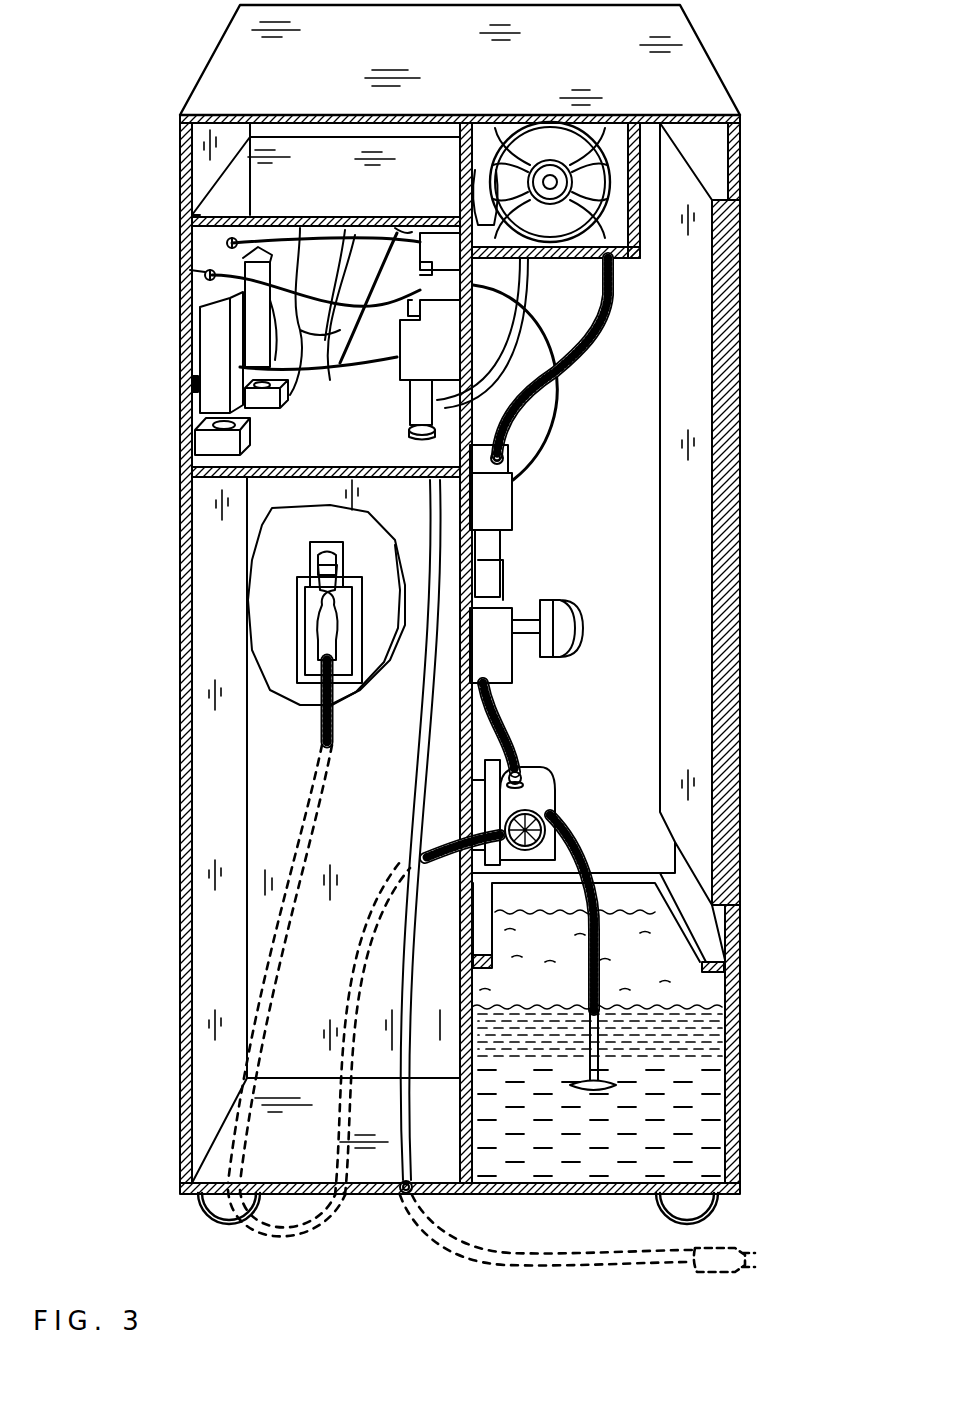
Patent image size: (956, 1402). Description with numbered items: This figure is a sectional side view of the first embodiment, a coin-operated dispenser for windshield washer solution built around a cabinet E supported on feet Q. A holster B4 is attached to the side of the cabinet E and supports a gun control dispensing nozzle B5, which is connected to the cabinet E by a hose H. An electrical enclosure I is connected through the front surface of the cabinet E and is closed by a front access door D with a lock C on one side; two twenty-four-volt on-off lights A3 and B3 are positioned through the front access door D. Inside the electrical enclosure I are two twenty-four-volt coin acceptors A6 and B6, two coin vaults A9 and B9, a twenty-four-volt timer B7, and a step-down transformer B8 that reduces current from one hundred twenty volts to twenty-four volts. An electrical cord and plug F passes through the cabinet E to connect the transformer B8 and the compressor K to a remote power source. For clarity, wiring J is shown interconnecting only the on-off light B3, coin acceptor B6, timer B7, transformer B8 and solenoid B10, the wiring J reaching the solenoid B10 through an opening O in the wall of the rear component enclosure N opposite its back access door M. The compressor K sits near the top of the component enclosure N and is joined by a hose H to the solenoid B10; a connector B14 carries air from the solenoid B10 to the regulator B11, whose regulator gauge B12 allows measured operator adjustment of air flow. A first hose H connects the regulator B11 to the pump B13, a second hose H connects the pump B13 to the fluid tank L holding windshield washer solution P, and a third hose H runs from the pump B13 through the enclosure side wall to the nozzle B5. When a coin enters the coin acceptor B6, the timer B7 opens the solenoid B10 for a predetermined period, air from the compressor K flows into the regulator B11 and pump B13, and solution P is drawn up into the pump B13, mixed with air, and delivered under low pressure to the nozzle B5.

The electrical enclosure I is at (213, 208).
The on-off light A3 is at (190, 222).
The front access door D is at (183, 246).
The coin acceptor A6 is at (190, 270).
The on-off light B3 is at (186, 283).
The coin acceptor B6 is at (207, 325).
The lock C is at (192, 384).
The coin vault B9 is at (206, 444).
The coin vault A9 is at (258, 401).
The wiring J is at (300, 228).
The timer B7 is at (418, 224).
The opening O is at (436, 230).
The step-down transformer B8 is at (408, 393).
The compressor K is at (588, 146).
The component enclosure N is at (725, 148).
The back access door M is at (733, 372).
The hose H is at (608, 302).
The solenoid B10 is at (512, 496).
The connector B14 is at (500, 548).
The regulator B11 is at (508, 590).
The regulator gauge B12 is at (585, 633).
The pump B13 is at (545, 800).
The fluid tank L is at (722, 982).
The windshield washer solution P is at (715, 1084).
The cabinet E is at (185, 1101).
The feet Q is at (214, 1212).
The electrical cord and plug F is at (405, 905).
The dispensing nozzle B5 is at (312, 582).
The holster B4 is at (352, 630).